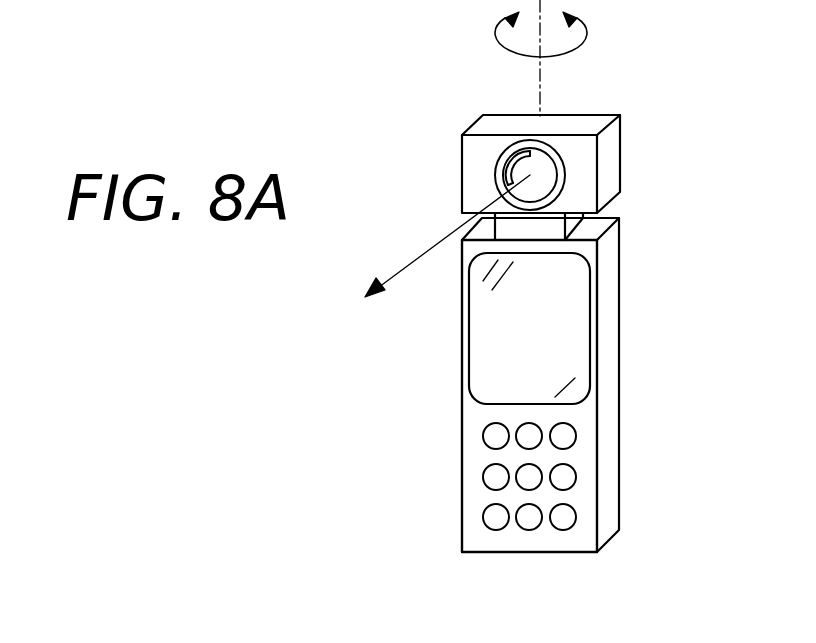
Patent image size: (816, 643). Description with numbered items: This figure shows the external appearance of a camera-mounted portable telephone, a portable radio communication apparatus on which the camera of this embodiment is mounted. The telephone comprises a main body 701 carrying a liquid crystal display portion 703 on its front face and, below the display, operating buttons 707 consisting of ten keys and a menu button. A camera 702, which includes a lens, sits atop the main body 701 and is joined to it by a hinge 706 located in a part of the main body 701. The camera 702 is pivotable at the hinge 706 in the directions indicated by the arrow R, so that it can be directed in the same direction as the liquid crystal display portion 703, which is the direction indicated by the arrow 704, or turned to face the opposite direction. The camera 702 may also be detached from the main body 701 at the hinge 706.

The main body 701 is at (577, 417).
The camera 702 is at (587, 152).
The liquid crystal display portion 703 is at (540, 307).
The arrow 704 is at (422, 255).
The hinge 706 is at (540, 232).
The operating buttons 707 is at (560, 517).
The arrow R is at (554, 58).